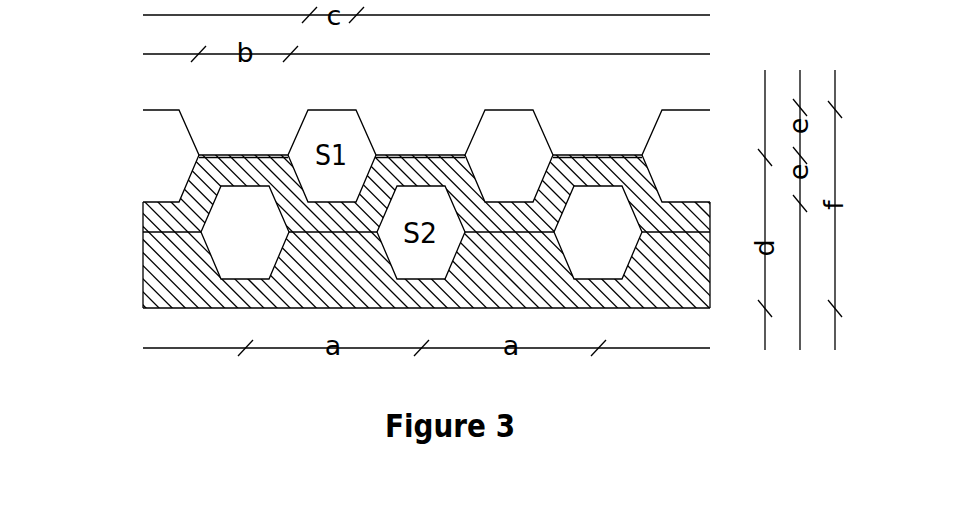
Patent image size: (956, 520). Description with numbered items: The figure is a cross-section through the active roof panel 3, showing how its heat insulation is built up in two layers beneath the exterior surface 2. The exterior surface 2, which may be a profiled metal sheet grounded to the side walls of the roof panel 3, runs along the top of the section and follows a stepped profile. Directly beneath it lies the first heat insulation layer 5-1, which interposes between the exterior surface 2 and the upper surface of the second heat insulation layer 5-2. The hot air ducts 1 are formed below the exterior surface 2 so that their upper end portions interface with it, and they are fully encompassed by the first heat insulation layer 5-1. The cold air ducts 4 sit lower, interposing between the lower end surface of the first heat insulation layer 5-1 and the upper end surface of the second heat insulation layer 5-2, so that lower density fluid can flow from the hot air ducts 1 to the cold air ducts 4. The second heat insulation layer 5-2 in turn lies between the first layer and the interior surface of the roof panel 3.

The hot air duct 1 is at (510, 142).
The exterior surface 2 is at (682, 110).
The roof panel 3 is at (708, 233).
The cold air duct 4 is at (598, 233).
The first heat insulation layer 5-1 is at (143, 213).
The second heat insulation layer 5-2 is at (173, 265).